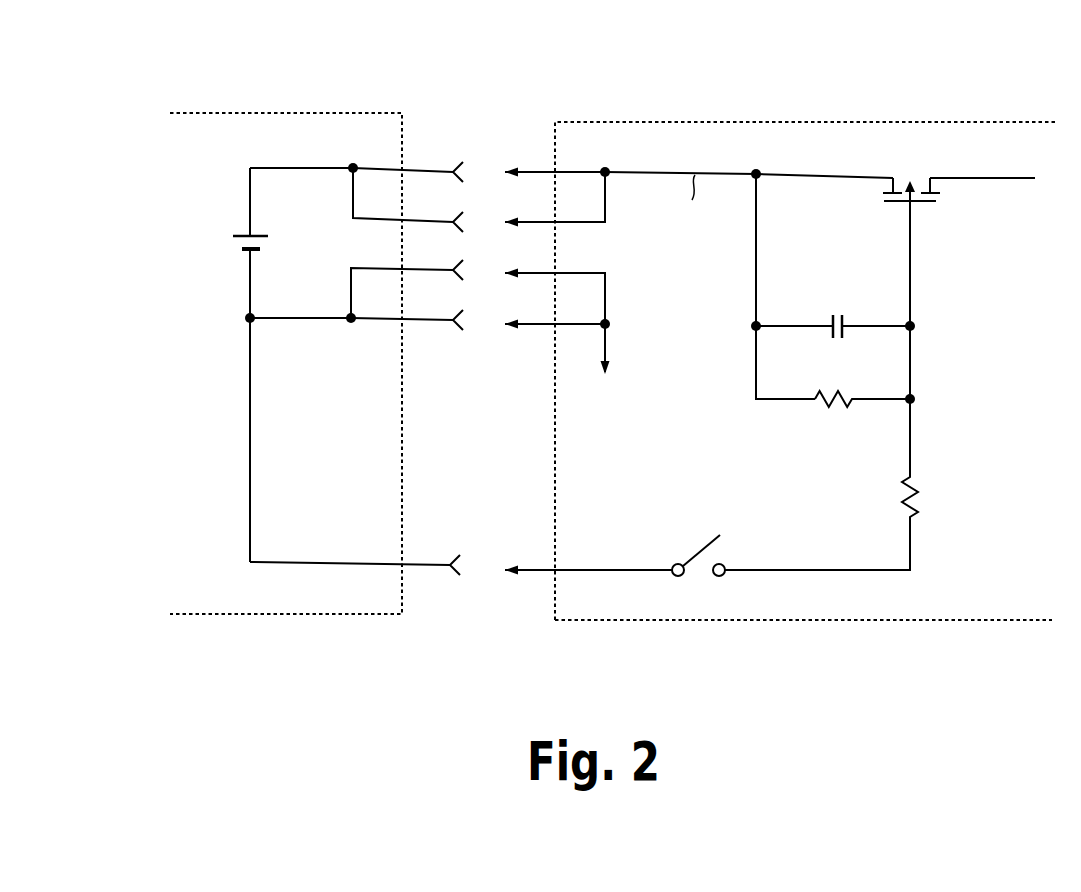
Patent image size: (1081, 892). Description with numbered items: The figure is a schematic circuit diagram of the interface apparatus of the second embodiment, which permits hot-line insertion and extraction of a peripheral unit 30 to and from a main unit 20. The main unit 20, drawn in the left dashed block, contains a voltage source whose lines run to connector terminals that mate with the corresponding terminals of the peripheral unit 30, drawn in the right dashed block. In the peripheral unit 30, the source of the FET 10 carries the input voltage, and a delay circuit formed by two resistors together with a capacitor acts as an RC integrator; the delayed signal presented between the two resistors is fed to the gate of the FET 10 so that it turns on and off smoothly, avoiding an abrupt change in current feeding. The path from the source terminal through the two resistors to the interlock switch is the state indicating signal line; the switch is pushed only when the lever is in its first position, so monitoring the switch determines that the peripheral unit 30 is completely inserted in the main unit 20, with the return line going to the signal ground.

The FET 10 is at (945, 200).
The main unit 20 is at (262, 614).
The peripheral unit 30 is at (780, 406).